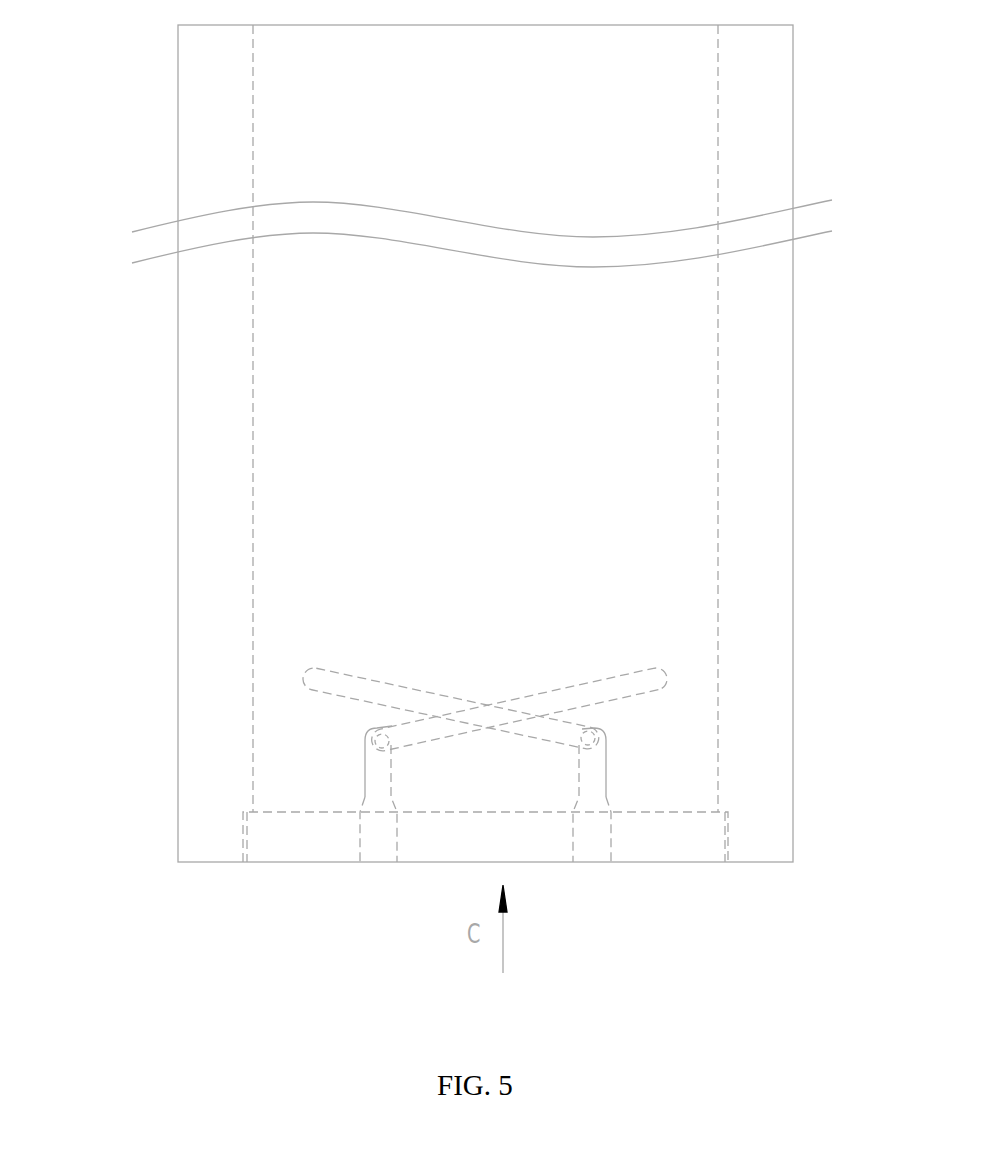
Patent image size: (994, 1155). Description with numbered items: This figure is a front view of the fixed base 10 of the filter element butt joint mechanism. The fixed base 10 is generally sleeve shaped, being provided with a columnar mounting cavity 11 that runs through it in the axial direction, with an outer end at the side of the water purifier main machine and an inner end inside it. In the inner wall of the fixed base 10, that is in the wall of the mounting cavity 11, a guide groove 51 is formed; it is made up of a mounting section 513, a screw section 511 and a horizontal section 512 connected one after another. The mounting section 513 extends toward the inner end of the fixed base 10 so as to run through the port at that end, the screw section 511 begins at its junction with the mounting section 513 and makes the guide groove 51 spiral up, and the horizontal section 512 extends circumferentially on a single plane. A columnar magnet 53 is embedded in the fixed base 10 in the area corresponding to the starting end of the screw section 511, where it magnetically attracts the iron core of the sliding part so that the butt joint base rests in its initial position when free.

The fixed base 10 is at (178, 388).
The mounting cavity 11 is at (253, 440).
The guide groove 51 is at (330, 748).
The screw section 511 is at (528, 690).
The horizontal section 512 is at (645, 667).
The mounting section 513 is at (365, 783).
The magnet 53 is at (390, 742).